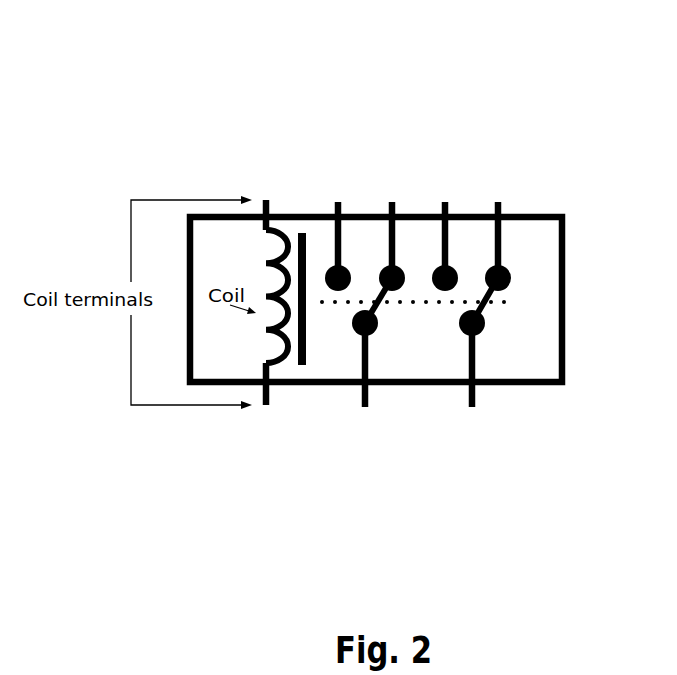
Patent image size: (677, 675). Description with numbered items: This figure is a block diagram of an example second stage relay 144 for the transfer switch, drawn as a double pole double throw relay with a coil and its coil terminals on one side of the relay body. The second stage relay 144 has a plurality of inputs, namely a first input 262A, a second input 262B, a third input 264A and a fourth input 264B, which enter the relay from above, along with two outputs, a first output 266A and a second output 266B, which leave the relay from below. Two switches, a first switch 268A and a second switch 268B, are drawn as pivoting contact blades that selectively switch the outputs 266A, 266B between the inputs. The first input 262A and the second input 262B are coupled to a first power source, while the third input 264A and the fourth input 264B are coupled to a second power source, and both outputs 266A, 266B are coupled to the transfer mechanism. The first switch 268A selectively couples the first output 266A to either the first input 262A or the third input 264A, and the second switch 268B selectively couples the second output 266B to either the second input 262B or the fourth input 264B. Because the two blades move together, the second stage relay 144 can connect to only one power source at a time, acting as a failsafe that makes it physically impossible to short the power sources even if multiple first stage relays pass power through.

The second stage relay 144 is at (610, 83).
The first input 262A is at (337, 203).
The second input 262B is at (443, 203).
The third input 264A is at (390, 203).
The fourth input 264B is at (498, 203).
The first output 266A is at (362, 397).
The second output 266B is at (467, 397).
The first switch 268A is at (386, 316).
The second switch 268B is at (493, 316).